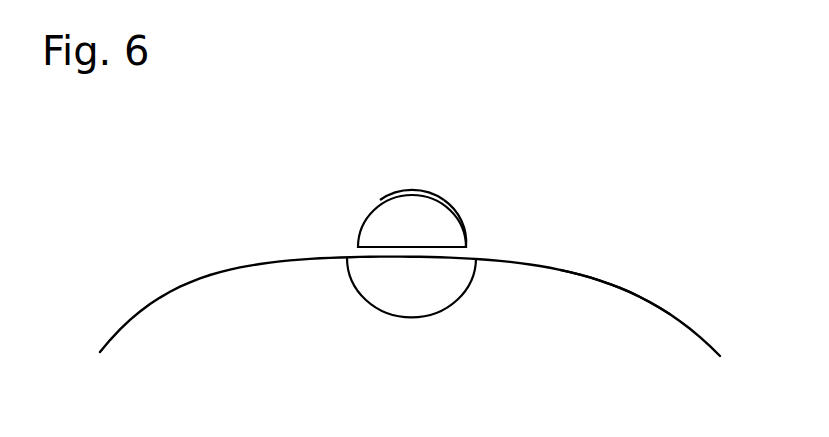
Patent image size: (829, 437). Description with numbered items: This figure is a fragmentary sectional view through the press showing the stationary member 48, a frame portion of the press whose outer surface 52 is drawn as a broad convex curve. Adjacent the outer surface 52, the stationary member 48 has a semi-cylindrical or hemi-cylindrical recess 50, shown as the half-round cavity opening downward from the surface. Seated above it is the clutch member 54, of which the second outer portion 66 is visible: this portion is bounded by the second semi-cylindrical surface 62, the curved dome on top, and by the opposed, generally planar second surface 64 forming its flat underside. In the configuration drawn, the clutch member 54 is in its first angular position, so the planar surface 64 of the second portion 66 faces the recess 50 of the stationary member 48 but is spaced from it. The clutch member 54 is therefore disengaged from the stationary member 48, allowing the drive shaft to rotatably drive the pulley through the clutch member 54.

The stationary member 48 is at (247, 266).
The recess 50 is at (413, 317).
The outer surface 52 is at (629, 292).
The clutch member 54 is at (368, 217).
The second semi-cylindrical surface 62 is at (403, 196).
The second planar surface 64 is at (393, 248).
The second outer portion 66 is at (452, 212).